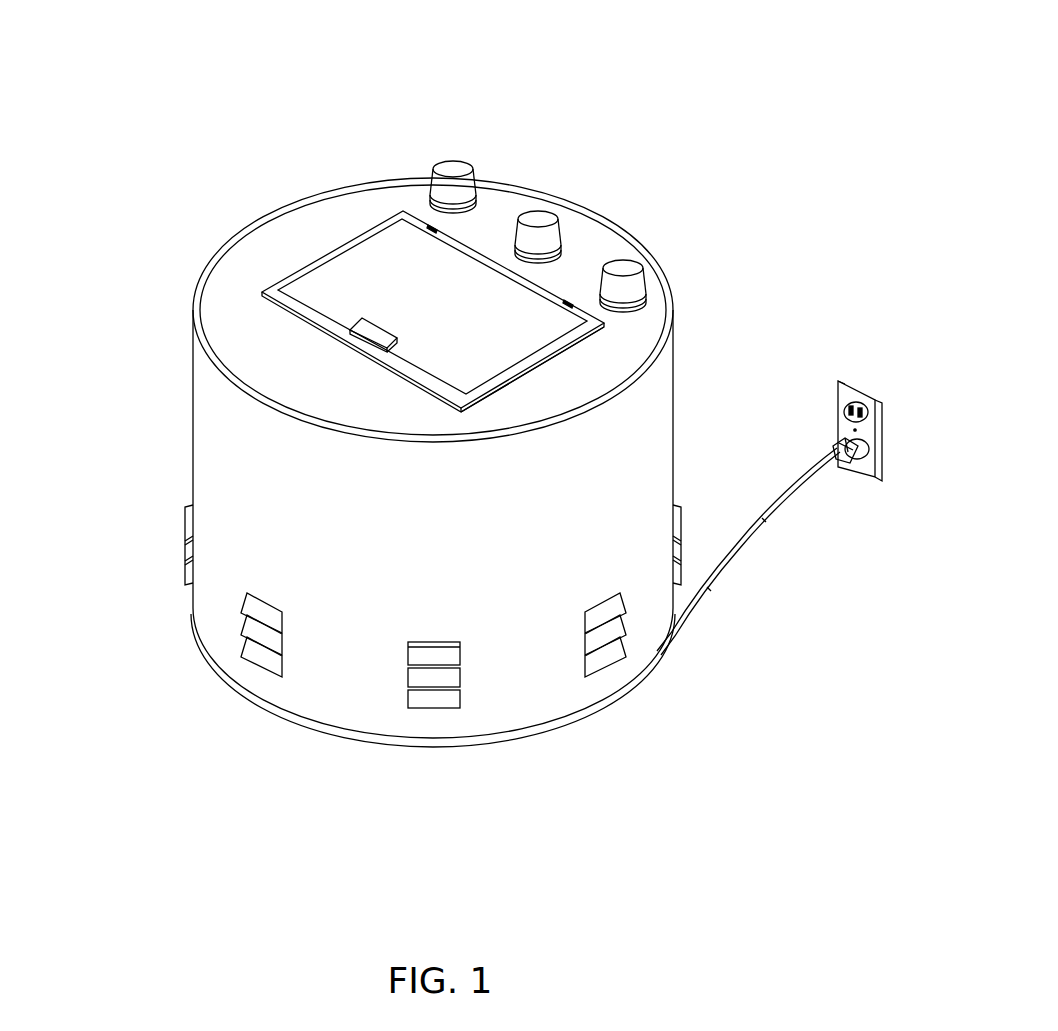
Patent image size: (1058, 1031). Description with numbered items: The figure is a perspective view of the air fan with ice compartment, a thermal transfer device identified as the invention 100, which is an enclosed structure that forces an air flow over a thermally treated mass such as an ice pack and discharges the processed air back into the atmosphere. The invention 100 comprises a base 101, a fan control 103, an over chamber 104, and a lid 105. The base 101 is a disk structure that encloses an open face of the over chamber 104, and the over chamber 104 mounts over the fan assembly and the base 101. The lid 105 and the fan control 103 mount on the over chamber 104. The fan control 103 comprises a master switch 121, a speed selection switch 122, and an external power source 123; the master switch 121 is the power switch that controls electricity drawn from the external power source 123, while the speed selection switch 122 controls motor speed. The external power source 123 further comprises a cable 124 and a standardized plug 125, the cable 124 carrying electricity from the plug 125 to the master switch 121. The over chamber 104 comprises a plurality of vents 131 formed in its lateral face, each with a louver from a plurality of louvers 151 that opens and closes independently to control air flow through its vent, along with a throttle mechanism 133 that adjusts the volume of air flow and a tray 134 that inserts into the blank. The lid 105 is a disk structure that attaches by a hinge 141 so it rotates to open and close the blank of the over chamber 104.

The invention 100 is at (112, 84).
The base 101 is at (543, 733).
The fan control 103 is at (578, 50).
The over chamber 104 is at (671, 418).
The lid 105 is at (368, 260).
The master switch 121 is at (467, 161).
The speed selection switch 122 is at (550, 212).
The throttle mechanism 133 is at (630, 270).
The external power source 123 is at (875, 440).
The cable 124 is at (722, 570).
The NEMA 5-15 plug 125 is at (853, 467).
The plurality of vents 131 is at (287, 603).
The tray 134 is at (545, 362).
The hinge 141 is at (566, 306).
The plurality of louvers 151 is at (423, 707).